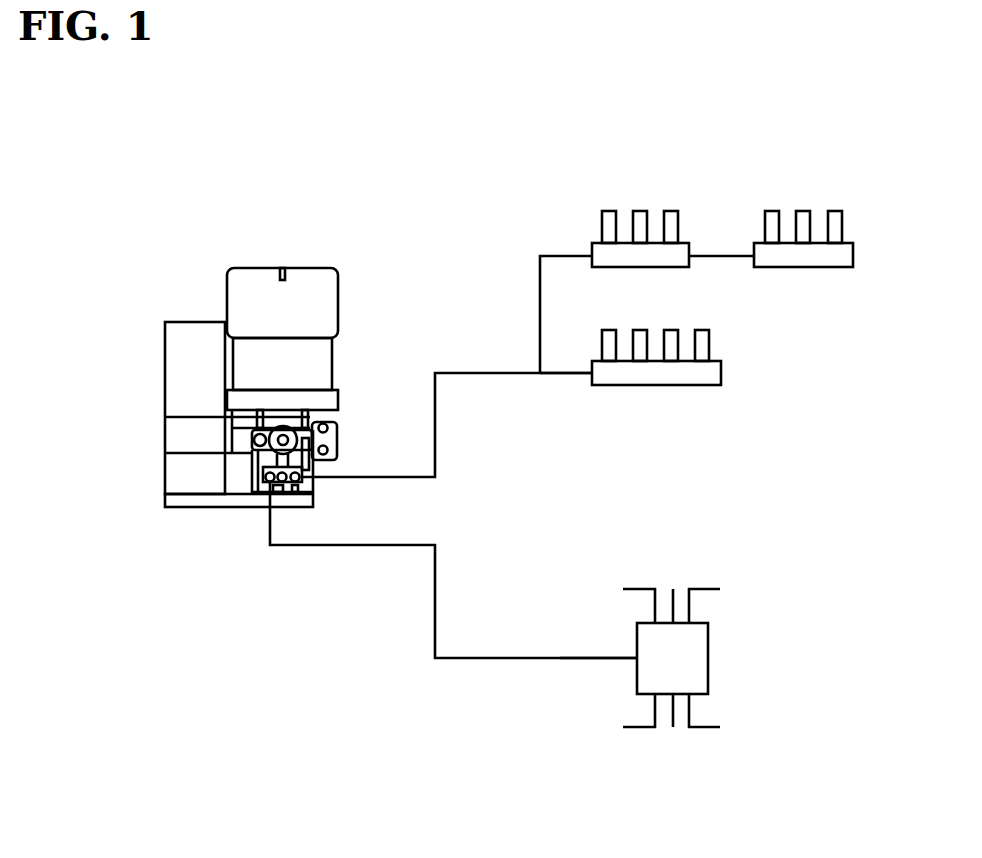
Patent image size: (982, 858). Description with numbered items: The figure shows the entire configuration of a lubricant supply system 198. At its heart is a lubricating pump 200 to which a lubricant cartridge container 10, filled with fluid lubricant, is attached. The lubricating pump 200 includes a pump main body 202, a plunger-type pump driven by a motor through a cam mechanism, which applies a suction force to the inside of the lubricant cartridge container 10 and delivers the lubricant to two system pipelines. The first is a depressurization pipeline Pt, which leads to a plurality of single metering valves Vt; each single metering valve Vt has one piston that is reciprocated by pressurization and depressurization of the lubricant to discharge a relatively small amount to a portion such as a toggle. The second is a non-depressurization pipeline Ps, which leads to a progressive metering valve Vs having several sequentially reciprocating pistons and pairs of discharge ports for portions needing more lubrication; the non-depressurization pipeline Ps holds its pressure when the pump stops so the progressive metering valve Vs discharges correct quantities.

The lubricant supply system 198 is at (430, 160).
The lubricant cartridge container 10 is at (252, 267).
The lubricating pump 200 is at (165, 490).
The pump main body 202 is at (333, 438).
The single metering valve Vt is at (672, 210).
The progressive metering valve Vs is at (708, 658).
The depressurization pipeline Pt is at (508, 374).
The non-depressurization pipeline Ps is at (520, 656).